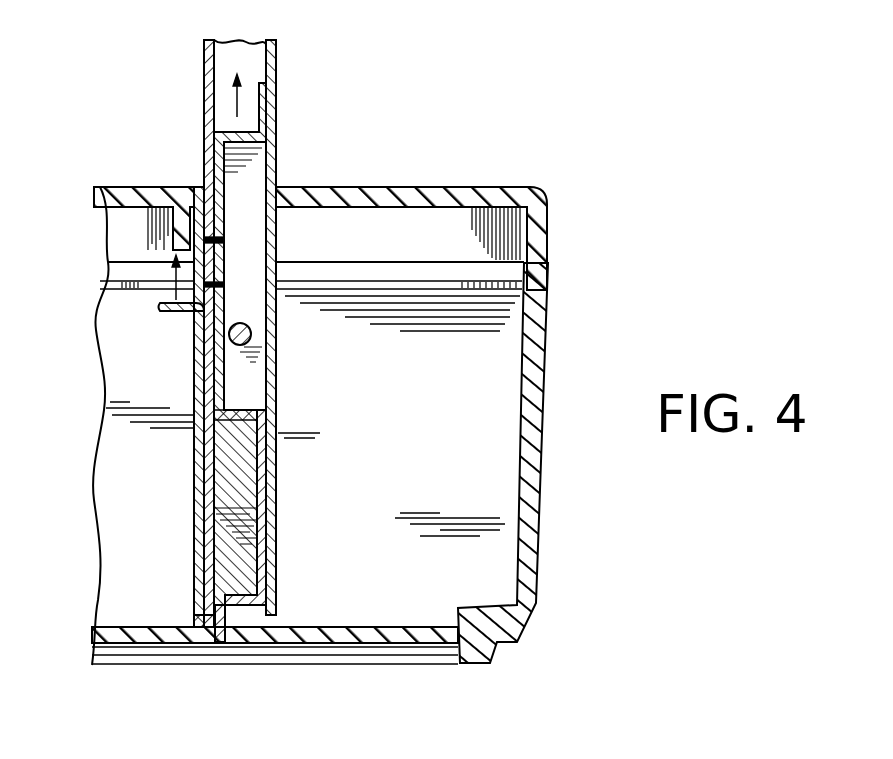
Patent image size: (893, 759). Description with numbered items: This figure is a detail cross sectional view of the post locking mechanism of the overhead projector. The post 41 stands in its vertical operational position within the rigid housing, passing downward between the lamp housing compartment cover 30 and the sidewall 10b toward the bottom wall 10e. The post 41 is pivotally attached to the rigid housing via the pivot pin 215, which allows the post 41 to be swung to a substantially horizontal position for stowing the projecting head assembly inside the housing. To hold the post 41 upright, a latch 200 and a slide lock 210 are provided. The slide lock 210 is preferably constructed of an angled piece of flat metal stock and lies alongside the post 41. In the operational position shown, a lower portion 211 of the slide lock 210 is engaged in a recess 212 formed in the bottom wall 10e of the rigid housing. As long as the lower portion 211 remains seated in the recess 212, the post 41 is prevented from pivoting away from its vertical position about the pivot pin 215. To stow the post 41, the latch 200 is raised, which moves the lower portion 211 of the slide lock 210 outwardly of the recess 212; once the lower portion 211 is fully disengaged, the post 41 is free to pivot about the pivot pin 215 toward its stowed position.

The post 41 is at (253, 63).
The lamp housing compartment cover 30 is at (440, 192).
The sidewall 10b is at (543, 503).
The bottom wall 10e is at (412, 627).
The latch 200 is at (178, 312).
The slide lock 210 is at (282, 447).
The lower portion 211 is at (200, 622).
The recess 212 is at (230, 622).
The pivot pin 215 is at (253, 334).